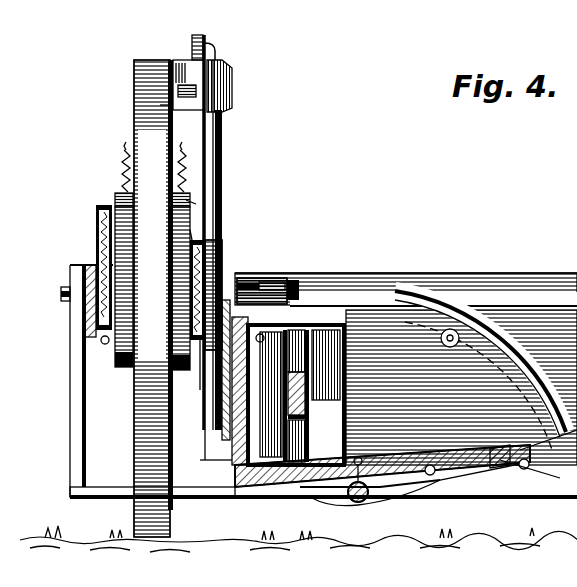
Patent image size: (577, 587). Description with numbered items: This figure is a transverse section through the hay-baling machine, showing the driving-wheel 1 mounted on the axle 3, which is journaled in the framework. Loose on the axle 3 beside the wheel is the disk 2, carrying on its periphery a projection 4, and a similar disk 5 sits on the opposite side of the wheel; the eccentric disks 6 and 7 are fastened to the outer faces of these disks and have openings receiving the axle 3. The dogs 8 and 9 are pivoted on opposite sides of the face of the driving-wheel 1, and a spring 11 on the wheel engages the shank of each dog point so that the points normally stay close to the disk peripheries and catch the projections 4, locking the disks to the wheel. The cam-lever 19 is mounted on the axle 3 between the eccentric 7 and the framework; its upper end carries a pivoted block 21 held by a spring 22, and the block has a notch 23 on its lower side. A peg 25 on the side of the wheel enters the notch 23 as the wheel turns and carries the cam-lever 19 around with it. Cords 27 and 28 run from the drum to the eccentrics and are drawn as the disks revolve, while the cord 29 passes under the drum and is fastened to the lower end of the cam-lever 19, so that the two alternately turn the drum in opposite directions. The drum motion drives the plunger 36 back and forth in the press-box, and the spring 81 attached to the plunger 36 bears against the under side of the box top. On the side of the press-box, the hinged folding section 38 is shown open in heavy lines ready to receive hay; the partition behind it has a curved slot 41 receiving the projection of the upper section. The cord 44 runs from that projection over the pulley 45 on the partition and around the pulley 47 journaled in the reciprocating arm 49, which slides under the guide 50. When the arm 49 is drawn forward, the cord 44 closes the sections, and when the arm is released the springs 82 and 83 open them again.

The driving-wheel 1 is at (153, 298).
The disk 2 is at (122, 370).
The axle 3 is at (59, 294).
The projection 4 is at (114, 218).
The disk 5 is at (191, 235).
The eccentric disk 6 is at (97, 250).
The eccentric disk 7 is at (223, 244).
The dog 8 is at (114, 200).
The dog 9 is at (190, 205).
The spring 11 is at (120, 173).
The cam-lever 19 is at (214, 155).
The pivoted block 21 is at (191, 45).
The spring 22 is at (217, 43).
The notch 23 is at (186, 98).
The projection or peg 25 is at (172, 104).
The cord 27 is at (194, 317).
The cord 28 is at (110, 348).
The cord 29 is at (208, 462).
The plunger 36 is at (288, 391).
The folding section 38 is at (440, 482).
The curved slot or recess 41 is at (430, 300).
The cord 44 is at (280, 280).
The pulley 45 is at (456, 332).
The pulley 47 is at (294, 278).
The reciprocating arm 49 is at (250, 276).
The guide 50 is at (270, 280).
The spring 81 is at (262, 336).
The spring 82 is at (360, 503).
The spring 83 is at (525, 470).